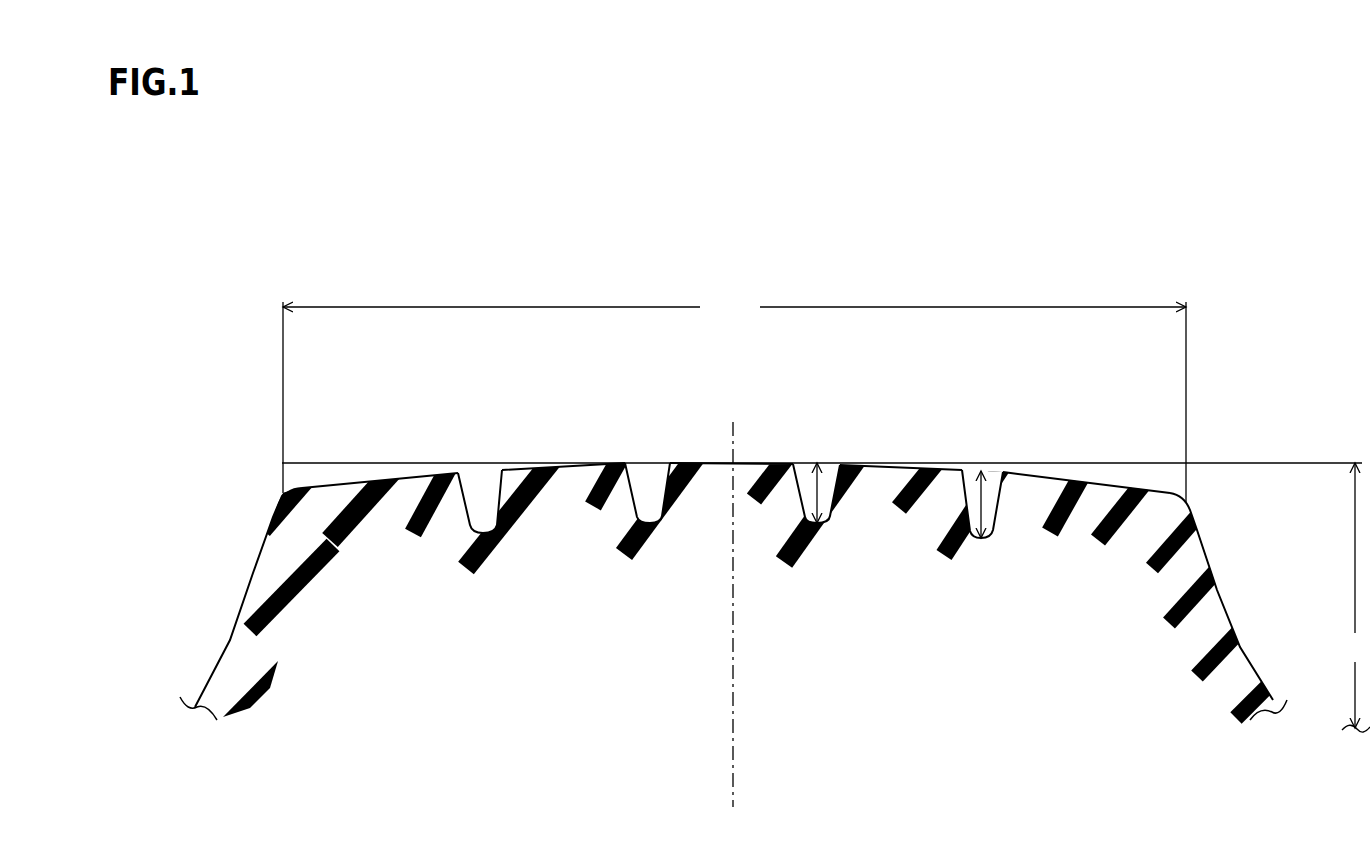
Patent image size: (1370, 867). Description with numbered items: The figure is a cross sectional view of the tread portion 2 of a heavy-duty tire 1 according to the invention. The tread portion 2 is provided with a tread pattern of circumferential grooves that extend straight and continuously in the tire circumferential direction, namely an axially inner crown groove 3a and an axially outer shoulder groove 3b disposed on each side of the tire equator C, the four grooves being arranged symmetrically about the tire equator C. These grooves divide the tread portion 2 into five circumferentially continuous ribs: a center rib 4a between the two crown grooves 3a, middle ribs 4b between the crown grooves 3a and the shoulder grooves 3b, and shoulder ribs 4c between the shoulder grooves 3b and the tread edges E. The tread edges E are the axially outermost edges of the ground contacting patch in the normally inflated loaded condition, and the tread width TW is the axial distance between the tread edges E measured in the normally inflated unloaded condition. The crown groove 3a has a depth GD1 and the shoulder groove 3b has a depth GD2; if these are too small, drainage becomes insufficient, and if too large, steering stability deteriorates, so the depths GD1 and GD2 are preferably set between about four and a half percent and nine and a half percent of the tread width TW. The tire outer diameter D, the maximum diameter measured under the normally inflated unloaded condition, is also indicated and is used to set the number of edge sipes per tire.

The heavy-duty tire 1 is at (1245, 390).
The tread portion 2 is at (402, 433).
The crown groove 3a is at (648, 473).
The shoulder groove 3b is at (482, 478).
The center rib 4a is at (772, 460).
The middle rib 4b is at (565, 465).
The shoulder rib 4c is at (345, 478).
The tread width TW is at (734, 398).
The tire equator C is at (732, 600).
The tread edge E is at (282, 493).
The tire outer diameter D is at (1356, 597).
The depth of crown groove GD1 is at (818, 500).
The depth of shoulder groove GD2 is at (983, 515).